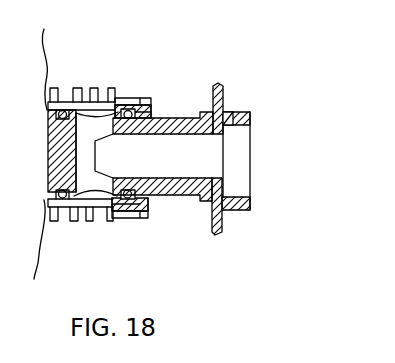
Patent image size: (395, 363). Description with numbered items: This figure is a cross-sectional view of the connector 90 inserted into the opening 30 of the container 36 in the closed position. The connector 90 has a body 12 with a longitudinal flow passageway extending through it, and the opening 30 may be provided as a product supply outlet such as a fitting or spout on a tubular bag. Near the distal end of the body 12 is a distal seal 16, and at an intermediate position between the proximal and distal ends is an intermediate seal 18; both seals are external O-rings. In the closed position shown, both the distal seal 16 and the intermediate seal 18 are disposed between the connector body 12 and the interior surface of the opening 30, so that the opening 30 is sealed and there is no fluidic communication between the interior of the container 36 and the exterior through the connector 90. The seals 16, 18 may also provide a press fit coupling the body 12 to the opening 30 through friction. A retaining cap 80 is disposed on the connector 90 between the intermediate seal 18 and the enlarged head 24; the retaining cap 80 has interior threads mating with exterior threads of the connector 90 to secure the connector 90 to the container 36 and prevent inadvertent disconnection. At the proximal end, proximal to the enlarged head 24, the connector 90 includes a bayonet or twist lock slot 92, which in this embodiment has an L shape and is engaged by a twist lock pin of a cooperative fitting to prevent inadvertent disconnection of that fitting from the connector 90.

The body 12 is at (182, 196).
The distal seal 16 is at (60, 204).
The intermediate seal 18 is at (127, 208).
The enlarged head 24 is at (218, 82).
The opening 30 is at (78, 72).
The container 36 is at (44, 30).
The retaining cap 80 is at (129, 97).
The connector 90 is at (242, 222).
The twist lock slot 92 is at (230, 110).